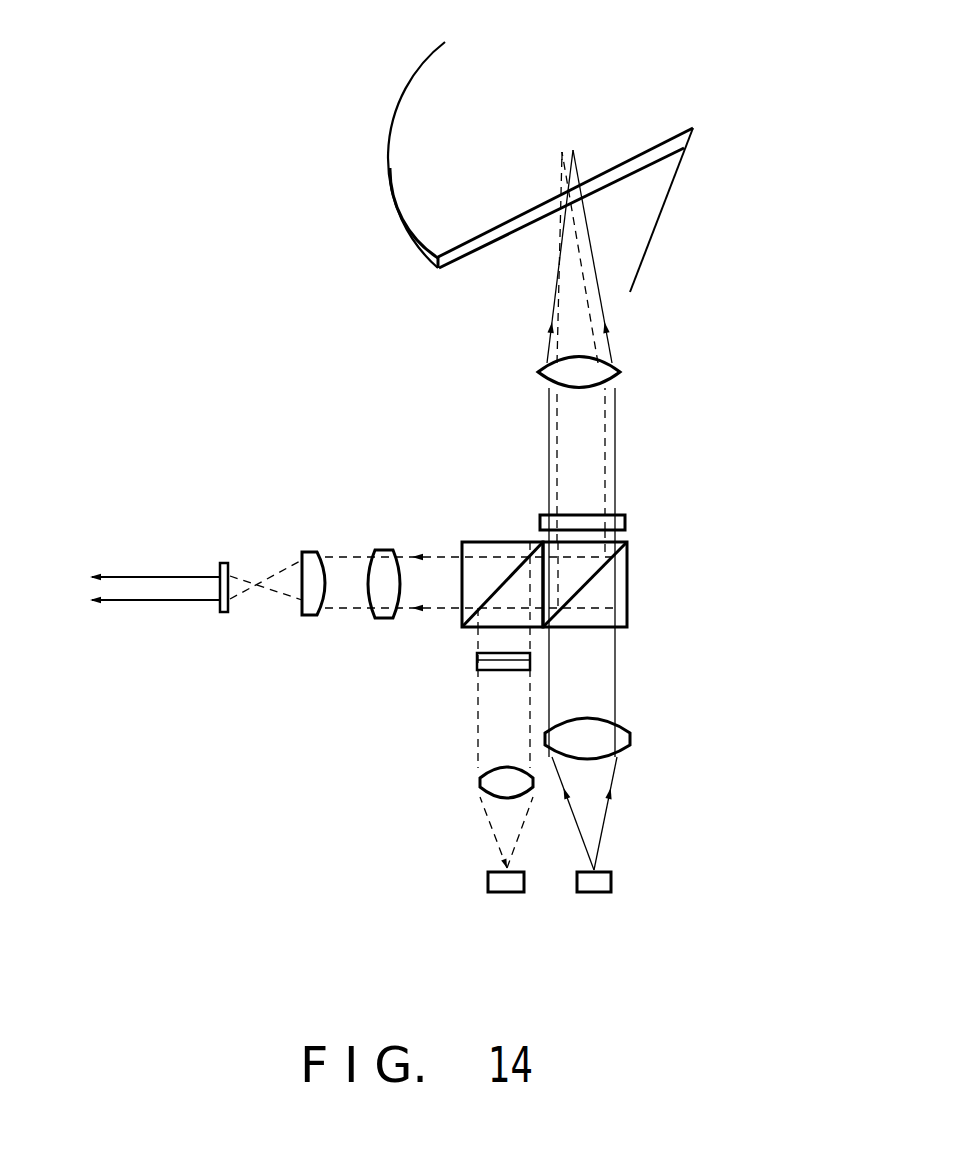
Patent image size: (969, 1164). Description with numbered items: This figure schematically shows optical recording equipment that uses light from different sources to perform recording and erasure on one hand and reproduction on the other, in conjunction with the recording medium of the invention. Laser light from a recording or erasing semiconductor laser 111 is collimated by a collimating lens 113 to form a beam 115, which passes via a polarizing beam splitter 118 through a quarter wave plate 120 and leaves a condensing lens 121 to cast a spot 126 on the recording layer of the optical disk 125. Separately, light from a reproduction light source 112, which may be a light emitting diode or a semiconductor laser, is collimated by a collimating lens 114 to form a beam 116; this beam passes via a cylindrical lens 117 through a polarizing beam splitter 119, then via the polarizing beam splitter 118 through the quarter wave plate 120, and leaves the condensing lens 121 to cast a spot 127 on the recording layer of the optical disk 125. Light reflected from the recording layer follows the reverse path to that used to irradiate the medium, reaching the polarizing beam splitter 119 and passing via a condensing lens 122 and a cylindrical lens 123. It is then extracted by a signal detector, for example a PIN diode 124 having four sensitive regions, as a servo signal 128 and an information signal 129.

The recording or erasing semiconductor laser 111 is at (594, 905).
The reproduction light source 112 is at (503, 905).
The collimating lens 113 is at (628, 738).
The collimating lens 114 is at (490, 783).
The beam 115 is at (605, 682).
The beam 116 is at (492, 735).
The cylindrical lens 117 is at (477, 660).
The polarizing beam splitter 118 is at (610, 590).
The polarizing beam splitter 119 is at (484, 541).
The quarter wave plate 120 is at (625, 513).
The condensing lens 121 is at (620, 372).
The condensing lens 122 is at (373, 618).
The cylindrical lens 123 is at (305, 615).
The PIN diode 124 is at (224, 612).
The optical disk 125 is at (400, 95).
The spot 126 is at (596, 140).
The spot 127 is at (563, 149).
The servo signal 128 is at (127, 576).
The information signal 129 is at (127, 603).